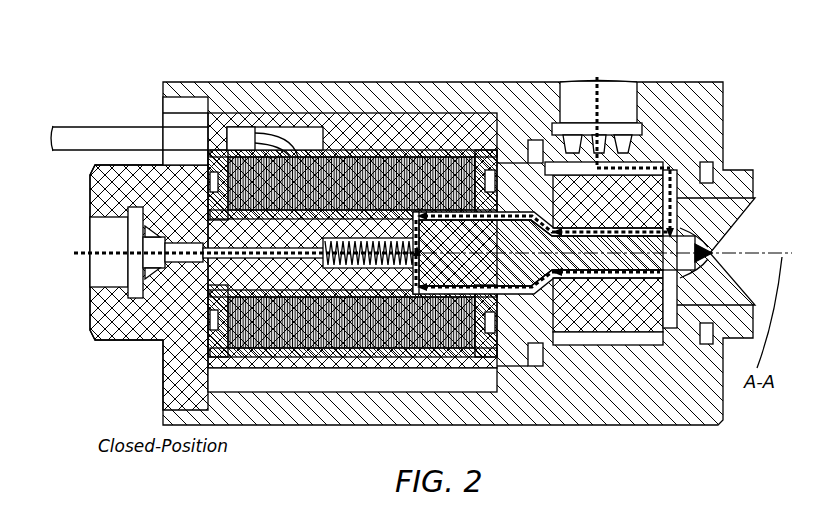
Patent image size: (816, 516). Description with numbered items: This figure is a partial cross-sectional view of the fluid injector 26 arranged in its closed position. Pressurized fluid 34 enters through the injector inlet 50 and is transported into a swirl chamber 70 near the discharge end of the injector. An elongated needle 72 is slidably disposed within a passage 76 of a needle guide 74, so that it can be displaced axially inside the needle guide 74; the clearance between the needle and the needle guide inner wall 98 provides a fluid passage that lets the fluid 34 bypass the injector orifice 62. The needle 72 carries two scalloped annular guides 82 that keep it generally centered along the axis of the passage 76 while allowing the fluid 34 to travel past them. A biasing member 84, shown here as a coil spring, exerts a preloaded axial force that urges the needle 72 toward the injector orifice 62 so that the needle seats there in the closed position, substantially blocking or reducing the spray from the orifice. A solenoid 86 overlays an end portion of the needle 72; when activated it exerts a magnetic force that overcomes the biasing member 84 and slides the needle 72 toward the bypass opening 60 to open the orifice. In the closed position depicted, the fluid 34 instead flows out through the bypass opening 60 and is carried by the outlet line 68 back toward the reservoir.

The fluid injector 26 is at (650, 70).
The fluid 34 is at (300, 248).
The solenoid 86 is at (358, 156).
The needle guide inner wall 98 is at (413, 226).
The injector inlet 50 is at (580, 74).
The annular guide 82 is at (658, 240).
The swirl chamber 70 is at (740, 199).
The injector orifice 62 is at (716, 247).
The elongated needle 72 is at (510, 292).
The needle guide 74 is at (580, 300).
The passage 76 is at (612, 285).
The biasing member 84 is at (337, 267).
The bypass opening 60 is at (413, 290).
The outlet line 68 is at (52, 255).